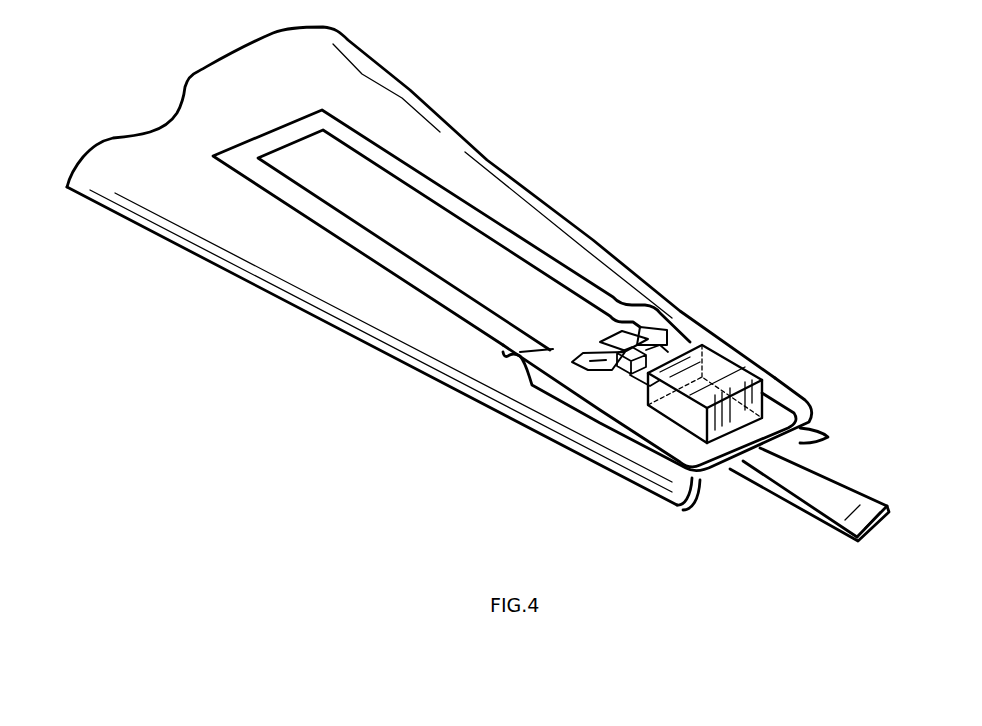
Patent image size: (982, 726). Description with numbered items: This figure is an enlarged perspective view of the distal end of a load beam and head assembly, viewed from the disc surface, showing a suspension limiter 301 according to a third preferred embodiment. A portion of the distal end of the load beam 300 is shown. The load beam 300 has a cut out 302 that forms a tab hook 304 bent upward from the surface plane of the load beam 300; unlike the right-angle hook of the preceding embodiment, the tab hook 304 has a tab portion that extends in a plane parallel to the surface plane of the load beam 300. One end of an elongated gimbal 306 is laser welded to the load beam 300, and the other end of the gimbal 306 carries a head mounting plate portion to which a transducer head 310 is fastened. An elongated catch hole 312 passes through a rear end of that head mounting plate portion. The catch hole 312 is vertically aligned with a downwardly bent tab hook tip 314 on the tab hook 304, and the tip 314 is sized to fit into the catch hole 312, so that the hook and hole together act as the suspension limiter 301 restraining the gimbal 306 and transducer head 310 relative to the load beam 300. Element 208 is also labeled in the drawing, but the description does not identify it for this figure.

The load beam 300 is at (563, 242).
The suspension limiter 301 is at (553, 349).
The cut out 302 is at (597, 365).
The tab hook 304 is at (632, 345).
The elongated gimbal 306 is at (490, 230).
The transducer head 310 is at (737, 367).
The elongated catch hole 312 is at (627, 370).
The tab hook tip 314 is at (650, 354).
The connector end 208 is at (640, 387).